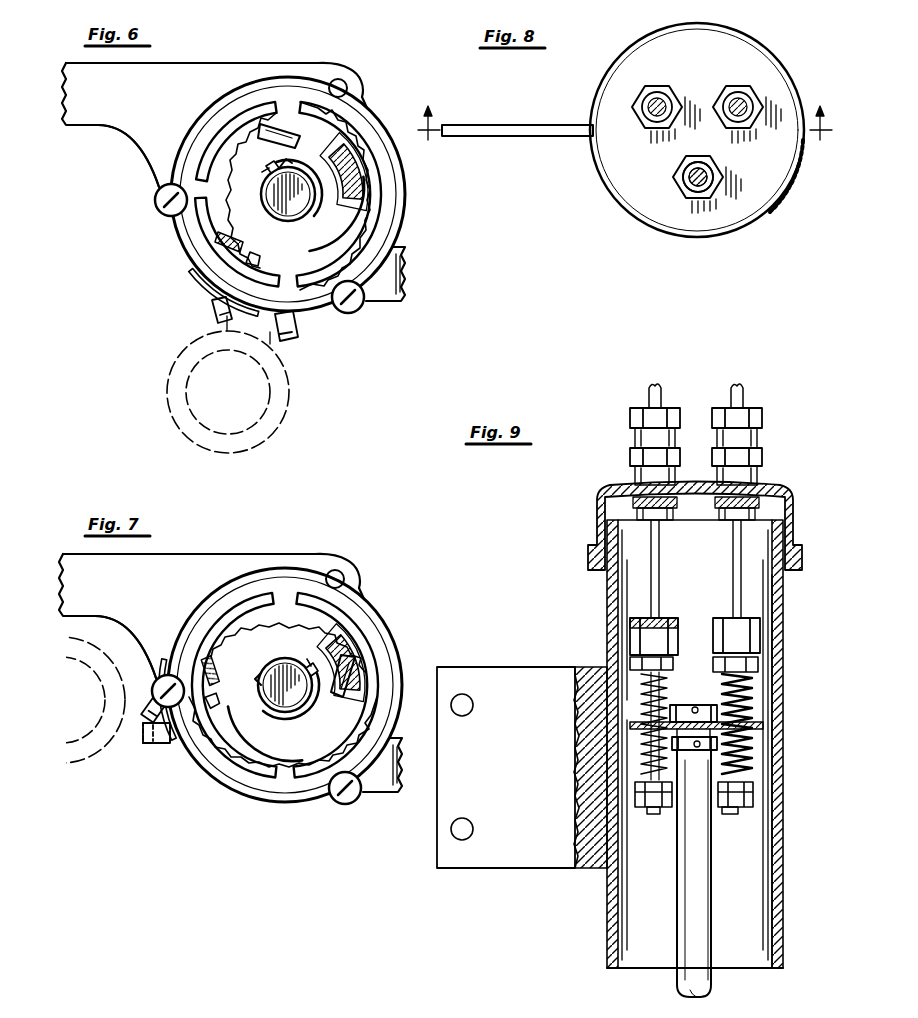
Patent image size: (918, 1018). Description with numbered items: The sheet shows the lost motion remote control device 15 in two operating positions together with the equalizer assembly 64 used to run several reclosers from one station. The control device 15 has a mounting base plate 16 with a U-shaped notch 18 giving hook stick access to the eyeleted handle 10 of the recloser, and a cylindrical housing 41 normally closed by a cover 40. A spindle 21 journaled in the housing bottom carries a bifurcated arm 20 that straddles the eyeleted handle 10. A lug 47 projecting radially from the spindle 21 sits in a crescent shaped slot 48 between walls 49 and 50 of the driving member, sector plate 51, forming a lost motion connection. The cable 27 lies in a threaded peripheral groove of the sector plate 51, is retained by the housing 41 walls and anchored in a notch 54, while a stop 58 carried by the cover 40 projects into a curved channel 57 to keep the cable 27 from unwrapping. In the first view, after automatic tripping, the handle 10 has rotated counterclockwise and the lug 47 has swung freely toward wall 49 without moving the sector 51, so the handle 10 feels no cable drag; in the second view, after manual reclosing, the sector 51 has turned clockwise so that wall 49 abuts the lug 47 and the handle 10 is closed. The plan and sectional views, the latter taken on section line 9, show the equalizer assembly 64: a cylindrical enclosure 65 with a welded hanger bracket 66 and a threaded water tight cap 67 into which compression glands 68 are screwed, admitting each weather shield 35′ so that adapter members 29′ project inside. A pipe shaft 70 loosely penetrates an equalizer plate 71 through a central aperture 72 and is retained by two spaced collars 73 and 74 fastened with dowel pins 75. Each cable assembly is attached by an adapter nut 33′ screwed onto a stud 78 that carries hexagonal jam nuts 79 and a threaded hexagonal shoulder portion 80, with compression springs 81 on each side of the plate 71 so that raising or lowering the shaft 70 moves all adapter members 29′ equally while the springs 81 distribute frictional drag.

In FIG. 6, the eyeleted handle 10 is at (203, 384).
In FIG. 7, the eyeleted handle 10 is at (62, 721).
In FIG. 6, the remote control device 15 is at (241, 187).
In FIG. 7, the remote control device 15 is at (239, 678).
In FIG. 6, the mounting base plate 16 is at (192, 54).
In FIG. 7, the mounting base plate 16 is at (189, 538).
In FIG. 6, the U-shaped notch 18 is at (128, 143).
In FIG. 7, the U-shaped notch 18 is at (125, 632).
In FIG. 6, the bifurcated arm 20 is at (315, 332).
In FIG. 7, the bifurcated arm 20 is at (158, 755).
In FIG. 6, the spindle 21 is at (288, 208).
In FIG. 7, the spindle 21 is at (277, 667).
In FIG. 6, the cable 27 is at (273, 200).
In FIG. 7, the cable 27 is at (250, 671).
In FIG. 8, the adapter member 29′ is at (696, 190).
In FIG. 9, the adapter member 29′ is at (736, 392).
In FIG. 9, the adapter nut 33′ is at (718, 632).
In FIG. 8, the weather shield 35′ is at (684, 170).
In FIG. 9, the weather shield 35′ is at (752, 402).
In FIG. 6, the cover 40 is at (208, 194).
In FIG. 7, the cover 40 is at (228, 675).
In FIG. 6, the cylindrical housing 41 is at (215, 296).
In FIG. 7, the cylindrical housing 41 is at (165, 677).
In FIG. 6, the lug 47 is at (247, 156).
In FIG. 7, the lug 47 is at (320, 646).
In FIG. 6, the crescent shaped slot 48 is at (281, 149).
In FIG. 7, the crescent shaped slot 48 is at (355, 676).
In FIG. 6, the wall 49 is at (235, 174).
In FIG. 7, the wall 49 is at (294, 653).
In FIG. 6, the wall 50 is at (298, 196).
In FIG. 7, the wall 50 is at (283, 695).
In FIG. 6, the sector plate 51 is at (224, 232).
In FIG. 7, the sector plate 51 is at (187, 661).
In FIG. 6, the notch 54 is at (272, 265).
In FIG. 7, the notch 54 is at (226, 702).
In FIG. 6, the curved channel 57 is at (369, 194).
In FIG. 7, the curved channel 57 is at (328, 712).
In FIG. 6, the stop 58 is at (363, 172).
In FIG. 7, the stop 58 is at (371, 660).
In FIG. 8, the equalizer assembly 64 is at (595, 192).
In FIG. 9, the equalizer assembly 64 is at (596, 611).
In FIG. 9, the cylindrical enclosure 65 is at (778, 596).
In FIG. 8, the hanger bracket 66 is at (530, 137).
In FIG. 9, the hanger bracket 66 is at (545, 684).
In FIG. 8, the water tight cap 67 is at (775, 172).
In FIG. 9, the water tight cap 67 is at (797, 548).
In FIG. 8, the compression gland 68 is at (684, 185).
In FIG. 9, the compression gland 68 is at (764, 458).
In FIG. 9, the pipe shaft 70 is at (696, 918).
In FIG. 9, the equalizer plate 71 is at (765, 727).
In FIG. 9, the central aperture 72 is at (672, 731).
In FIG. 9, the collar 73 is at (705, 712).
In FIG. 9, the collar 74 is at (690, 752).
In FIG. 9, the dowel pin 75 is at (695, 706).
In FIG. 9, the stud 78 is at (655, 816).
In FIG. 9, the hexagonal jam nut 79 is at (756, 800).
In FIG. 9, the hexagonal shoulder portion 80 is at (718, 664).
In FIG. 9, the compression spring 81 is at (750, 694).
In FIG. 8, the section line 9 is at (625, 135).